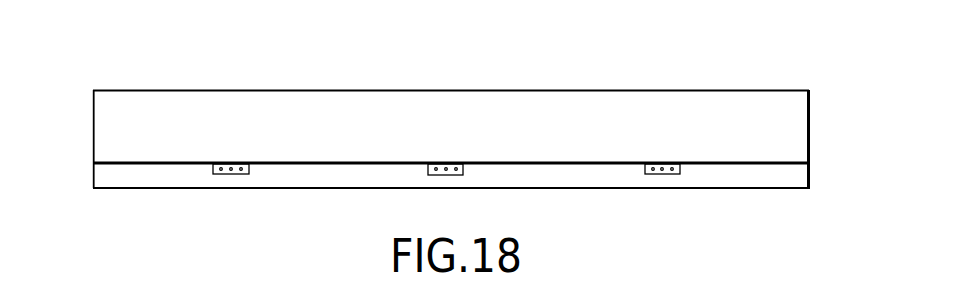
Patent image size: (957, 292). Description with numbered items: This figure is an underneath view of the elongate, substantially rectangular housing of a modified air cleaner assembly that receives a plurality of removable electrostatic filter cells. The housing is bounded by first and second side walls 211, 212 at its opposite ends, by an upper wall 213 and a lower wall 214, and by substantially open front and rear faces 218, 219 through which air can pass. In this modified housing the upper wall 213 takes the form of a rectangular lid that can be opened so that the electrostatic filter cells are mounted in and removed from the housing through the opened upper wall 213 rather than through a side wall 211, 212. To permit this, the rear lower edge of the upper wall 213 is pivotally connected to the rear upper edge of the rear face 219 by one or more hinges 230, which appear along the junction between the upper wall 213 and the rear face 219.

The first side wall 211 is at (810, 113).
The second side wall 212 is at (93, 125).
The upper wall 213 is at (795, 180).
The lower wall 214 is at (468, 134).
The front face 218 is at (223, 90).
The rear face 219 is at (703, 163).
The hinges 230 is at (222, 176).